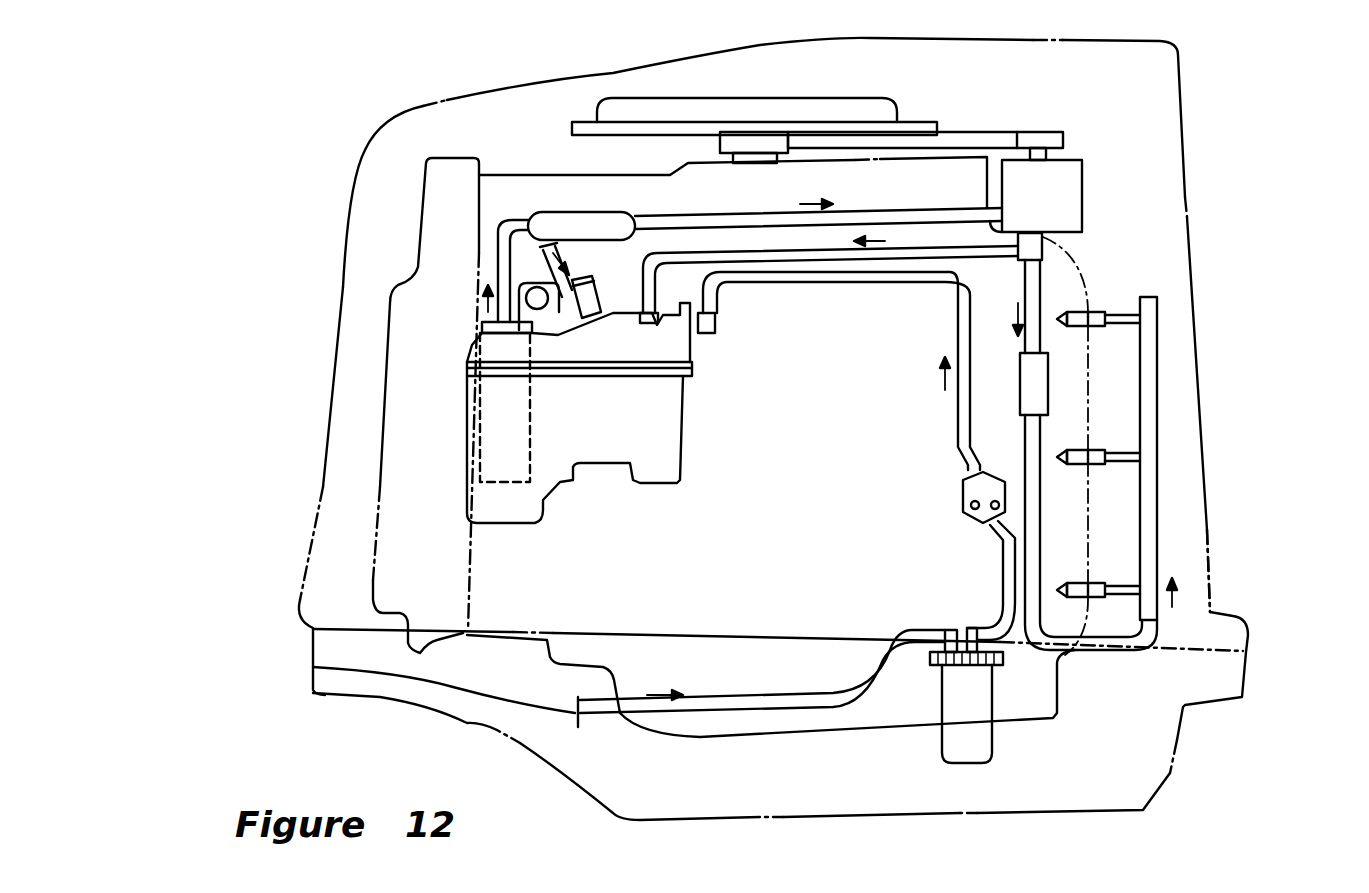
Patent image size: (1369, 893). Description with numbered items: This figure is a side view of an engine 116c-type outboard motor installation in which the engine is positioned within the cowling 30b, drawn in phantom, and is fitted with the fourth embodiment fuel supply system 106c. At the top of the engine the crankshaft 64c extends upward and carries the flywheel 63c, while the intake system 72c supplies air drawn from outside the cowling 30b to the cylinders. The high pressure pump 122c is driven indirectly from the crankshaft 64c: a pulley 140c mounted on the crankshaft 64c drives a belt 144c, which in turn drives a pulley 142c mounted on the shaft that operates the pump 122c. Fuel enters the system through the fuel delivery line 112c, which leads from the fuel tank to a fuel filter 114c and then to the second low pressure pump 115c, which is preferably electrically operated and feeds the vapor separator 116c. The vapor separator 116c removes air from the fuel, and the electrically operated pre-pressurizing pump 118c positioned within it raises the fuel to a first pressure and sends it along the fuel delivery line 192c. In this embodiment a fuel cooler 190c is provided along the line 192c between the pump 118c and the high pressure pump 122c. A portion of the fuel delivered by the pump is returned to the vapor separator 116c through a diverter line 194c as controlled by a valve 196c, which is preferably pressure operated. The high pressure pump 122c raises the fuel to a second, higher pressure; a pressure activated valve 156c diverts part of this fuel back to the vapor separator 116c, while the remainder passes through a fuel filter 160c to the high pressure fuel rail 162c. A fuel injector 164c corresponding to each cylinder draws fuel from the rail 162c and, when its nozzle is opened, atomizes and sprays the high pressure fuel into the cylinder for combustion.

The cowling 30b is at (1200, 422).
The flywheel 63c is at (870, 110).
The crankshaft 64c is at (747, 167).
The intake system 72c is at (410, 203).
The fuel supply system 106c is at (1155, 172).
The fuel delivery line 112c is at (822, 693).
The fuel filter 114c is at (967, 753).
The second low pressure pump 115c is at (967, 490).
The vapor separator 116c is at (587, 445).
The pre-pressurizing pump 118c is at (503, 443).
The high pressure pump 122c is at (1060, 180).
The pulley 140c is at (758, 140).
The pulley 142c is at (1040, 143).
The belt 144c is at (973, 140).
The pressure activated valve 156c is at (1043, 240).
The fuel filter 160c is at (1037, 377).
The high pressure fuel rail 162c is at (1147, 333).
The fuel injector 164c is at (1097, 450).
The fuel cooler 190c is at (557, 230).
The fuel delivery line 192c is at (783, 222).
The diverter line 194c is at (545, 258).
The valve 196c is at (595, 315).